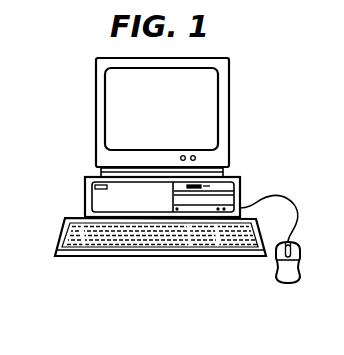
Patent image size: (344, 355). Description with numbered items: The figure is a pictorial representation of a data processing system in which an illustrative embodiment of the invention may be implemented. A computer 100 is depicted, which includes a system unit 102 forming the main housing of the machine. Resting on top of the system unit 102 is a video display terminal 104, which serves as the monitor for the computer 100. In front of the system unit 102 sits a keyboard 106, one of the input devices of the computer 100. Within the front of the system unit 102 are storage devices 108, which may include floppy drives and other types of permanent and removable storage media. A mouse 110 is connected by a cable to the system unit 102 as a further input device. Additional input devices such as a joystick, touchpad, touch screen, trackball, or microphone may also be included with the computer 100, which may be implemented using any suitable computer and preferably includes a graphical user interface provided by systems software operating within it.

The computer 100 is at (60, 60).
The system unit 102 is at (85, 195).
The video display terminal 104 is at (229, 114).
The keyboard 106 is at (80, 258).
The storage devices 108 is at (200, 187).
The mouse 110 is at (288, 283).